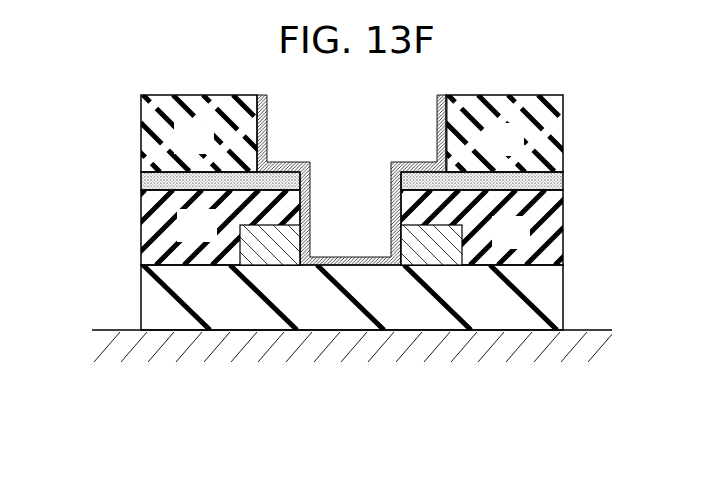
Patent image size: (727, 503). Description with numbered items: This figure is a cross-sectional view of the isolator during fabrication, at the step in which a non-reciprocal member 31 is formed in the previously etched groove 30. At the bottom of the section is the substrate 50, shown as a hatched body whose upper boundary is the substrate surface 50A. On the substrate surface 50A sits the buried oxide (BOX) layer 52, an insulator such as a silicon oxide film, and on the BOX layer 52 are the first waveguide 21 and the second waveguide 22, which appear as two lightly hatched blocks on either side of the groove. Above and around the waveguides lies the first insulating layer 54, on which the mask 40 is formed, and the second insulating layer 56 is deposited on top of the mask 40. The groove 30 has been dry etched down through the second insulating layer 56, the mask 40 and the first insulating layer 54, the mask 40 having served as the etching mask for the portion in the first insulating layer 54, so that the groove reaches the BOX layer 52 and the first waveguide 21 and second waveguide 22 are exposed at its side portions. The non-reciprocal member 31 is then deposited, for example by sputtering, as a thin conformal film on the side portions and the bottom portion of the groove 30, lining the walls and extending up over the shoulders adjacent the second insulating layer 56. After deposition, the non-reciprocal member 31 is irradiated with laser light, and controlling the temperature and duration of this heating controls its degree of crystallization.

The first waveguide 21 is at (275, 245).
The second waveguide 22 is at (430, 253).
The groove 30 is at (365, 231).
The non-reciprocal member 31 is at (396, 182).
The mask 40 is at (152, 180).
The substrate 50 is at (115, 348).
The substrate surface 50A is at (112, 329).
The buried oxide (BOX) layer 52 is at (498, 316).
The first insulating layer 54 is at (212, 239).
The second insulating layer 56 is at (208, 150).